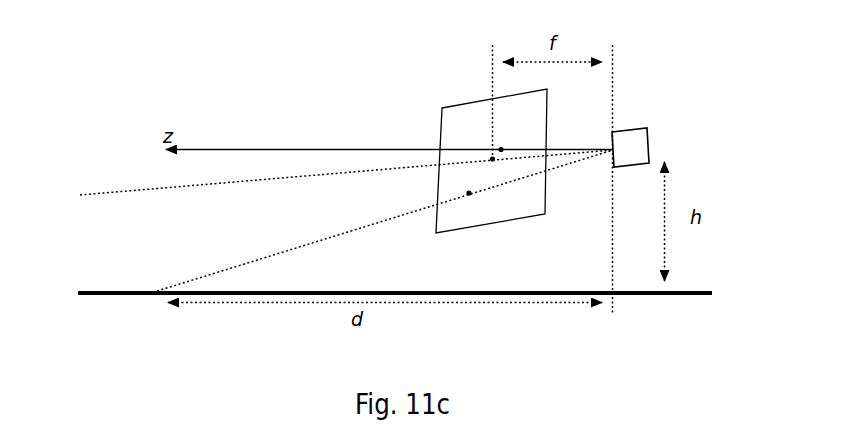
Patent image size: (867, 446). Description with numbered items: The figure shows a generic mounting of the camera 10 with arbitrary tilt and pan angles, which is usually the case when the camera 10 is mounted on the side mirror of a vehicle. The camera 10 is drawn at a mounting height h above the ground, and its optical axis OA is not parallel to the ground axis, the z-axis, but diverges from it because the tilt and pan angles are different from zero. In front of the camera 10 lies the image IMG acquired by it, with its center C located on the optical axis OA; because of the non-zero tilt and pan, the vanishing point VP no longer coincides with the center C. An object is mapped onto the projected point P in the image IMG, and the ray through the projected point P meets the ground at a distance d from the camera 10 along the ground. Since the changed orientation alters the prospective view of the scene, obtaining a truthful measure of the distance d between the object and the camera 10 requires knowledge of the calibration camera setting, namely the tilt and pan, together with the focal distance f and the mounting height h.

The camera 10 is at (633, 130).
The image IMG is at (434, 104).
The vanishing point VP is at (502, 141).
The center of the image C is at (494, 169).
The projected point P is at (477, 183).
The optical axis OA is at (110, 189).